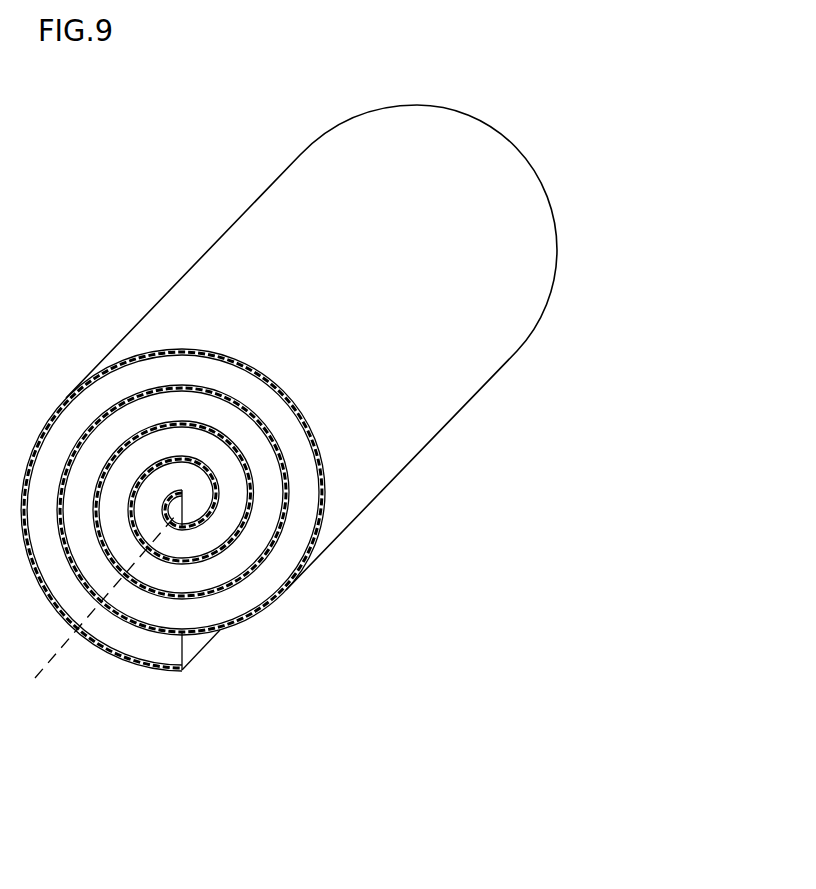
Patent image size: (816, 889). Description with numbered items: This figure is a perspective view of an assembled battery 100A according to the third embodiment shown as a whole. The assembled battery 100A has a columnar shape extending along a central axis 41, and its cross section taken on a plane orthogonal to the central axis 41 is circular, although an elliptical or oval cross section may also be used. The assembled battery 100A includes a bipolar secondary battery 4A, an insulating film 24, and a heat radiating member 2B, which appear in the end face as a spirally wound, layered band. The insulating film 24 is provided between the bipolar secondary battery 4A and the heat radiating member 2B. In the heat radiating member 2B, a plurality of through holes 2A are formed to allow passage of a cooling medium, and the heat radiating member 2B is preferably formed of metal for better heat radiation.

The assembled battery 100A is at (661, 74).
The heat radiating member 2B is at (233, 271).
The through holes 2A is at (325, 505).
The insulating film 24 is at (132, 638).
The bipolar secondary battery 4A is at (175, 650).
The central axis 41 is at (53, 650).